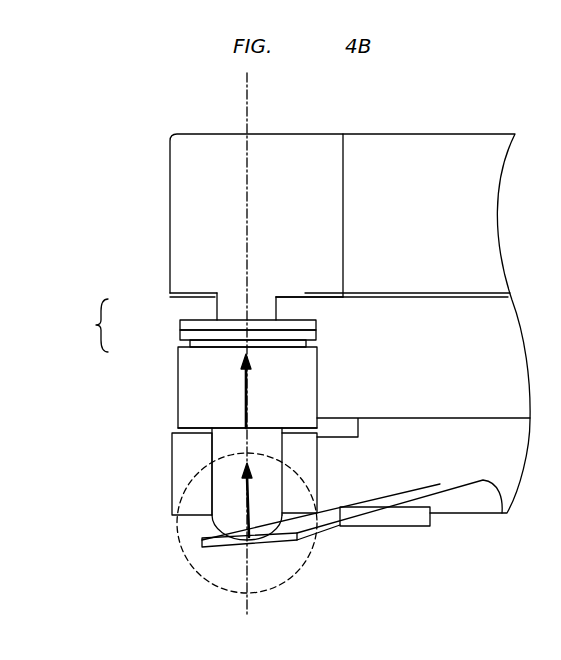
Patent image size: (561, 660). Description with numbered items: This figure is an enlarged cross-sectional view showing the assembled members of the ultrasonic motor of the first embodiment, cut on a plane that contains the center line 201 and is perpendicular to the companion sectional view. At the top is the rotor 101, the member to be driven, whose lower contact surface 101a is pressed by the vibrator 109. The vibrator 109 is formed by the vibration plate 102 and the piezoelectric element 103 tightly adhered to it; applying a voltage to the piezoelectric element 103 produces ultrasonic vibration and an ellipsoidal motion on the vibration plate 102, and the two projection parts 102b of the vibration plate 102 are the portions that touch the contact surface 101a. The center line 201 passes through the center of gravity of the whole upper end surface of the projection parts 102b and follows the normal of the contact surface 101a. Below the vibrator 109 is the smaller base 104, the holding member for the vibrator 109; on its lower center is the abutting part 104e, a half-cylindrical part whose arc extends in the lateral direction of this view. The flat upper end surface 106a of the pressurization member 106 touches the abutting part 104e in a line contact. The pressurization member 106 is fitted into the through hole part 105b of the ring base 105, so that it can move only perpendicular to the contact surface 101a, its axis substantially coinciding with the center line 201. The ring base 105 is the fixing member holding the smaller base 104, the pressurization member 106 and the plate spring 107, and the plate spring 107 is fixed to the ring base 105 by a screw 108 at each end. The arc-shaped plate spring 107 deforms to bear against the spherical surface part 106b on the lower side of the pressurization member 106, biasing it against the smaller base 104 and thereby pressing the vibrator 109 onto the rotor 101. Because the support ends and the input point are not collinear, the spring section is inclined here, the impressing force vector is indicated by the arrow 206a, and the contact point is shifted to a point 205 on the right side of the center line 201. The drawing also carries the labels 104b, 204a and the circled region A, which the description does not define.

The rotor 101 is at (208, 144).
The contact surface 101a is at (413, 298).
The center line 201 is at (250, 117).
The projection parts 102b is at (232, 303).
The vibrator 109 is at (84, 325).
The vibration plate 102 is at (179, 323).
The piezoelectric element 103 is at (180, 337).
The smaller base 104 is at (181, 368).
The spacer strip of mounting block 104b is at (283, 343).
The abutting part 104e is at (233, 422).
The flow direction arrow 204a is at (245, 397).
The upper end surface 106a is at (267, 428).
The ring base 105 is at (185, 467).
The pressurization member 106 is at (220, 495).
The spherical surface part 106b is at (213, 525).
The plate spring 107 is at (202, 540).
The point 205 is at (243, 537).
The arrow 206a is at (249, 485).
The through hole part 105b is at (283, 495).
The screw 108 is at (412, 497).
The enlarged detail region A is at (282, 583).